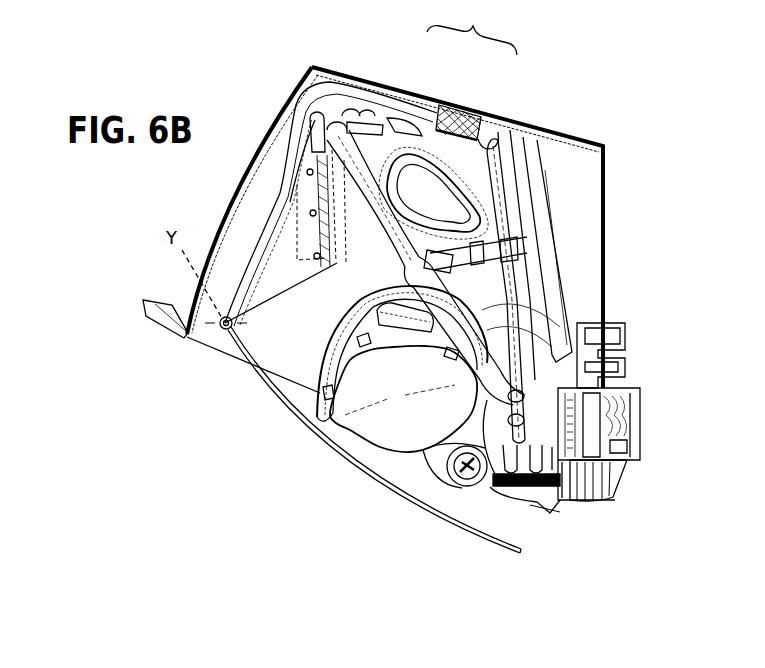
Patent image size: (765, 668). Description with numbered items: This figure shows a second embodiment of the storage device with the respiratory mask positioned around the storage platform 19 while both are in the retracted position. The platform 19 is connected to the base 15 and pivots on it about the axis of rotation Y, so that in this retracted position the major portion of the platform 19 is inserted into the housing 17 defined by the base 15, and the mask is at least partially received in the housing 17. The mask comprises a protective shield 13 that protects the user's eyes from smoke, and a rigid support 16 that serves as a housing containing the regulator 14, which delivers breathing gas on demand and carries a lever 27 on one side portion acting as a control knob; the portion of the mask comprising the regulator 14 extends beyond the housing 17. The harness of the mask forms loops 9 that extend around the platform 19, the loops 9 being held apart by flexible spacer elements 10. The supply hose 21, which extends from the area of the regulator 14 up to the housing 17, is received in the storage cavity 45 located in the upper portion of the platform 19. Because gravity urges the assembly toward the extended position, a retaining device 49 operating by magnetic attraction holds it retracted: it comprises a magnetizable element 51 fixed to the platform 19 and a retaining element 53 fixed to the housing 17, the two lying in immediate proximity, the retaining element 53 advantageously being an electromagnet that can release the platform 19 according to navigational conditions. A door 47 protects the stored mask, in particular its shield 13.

The loop 9 is at (507, 168).
The flexible spacer element 10 is at (513, 238).
The protective shield 13 is at (400, 432).
The regulator 14 is at (567, 490).
The base 15 is at (147, 300).
The rigid support 16 is at (557, 520).
The housing 17 is at (553, 176).
The storage platform 19 is at (318, 320).
The supply hose 21 is at (302, 92).
The lever 27 is at (600, 490).
The storage cavity 45 is at (300, 275).
The door 47 is at (461, 545).
The retaining device 49 is at (472, 30).
The magnetizable element 51 is at (453, 108).
The retaining element 53 is at (470, 115).